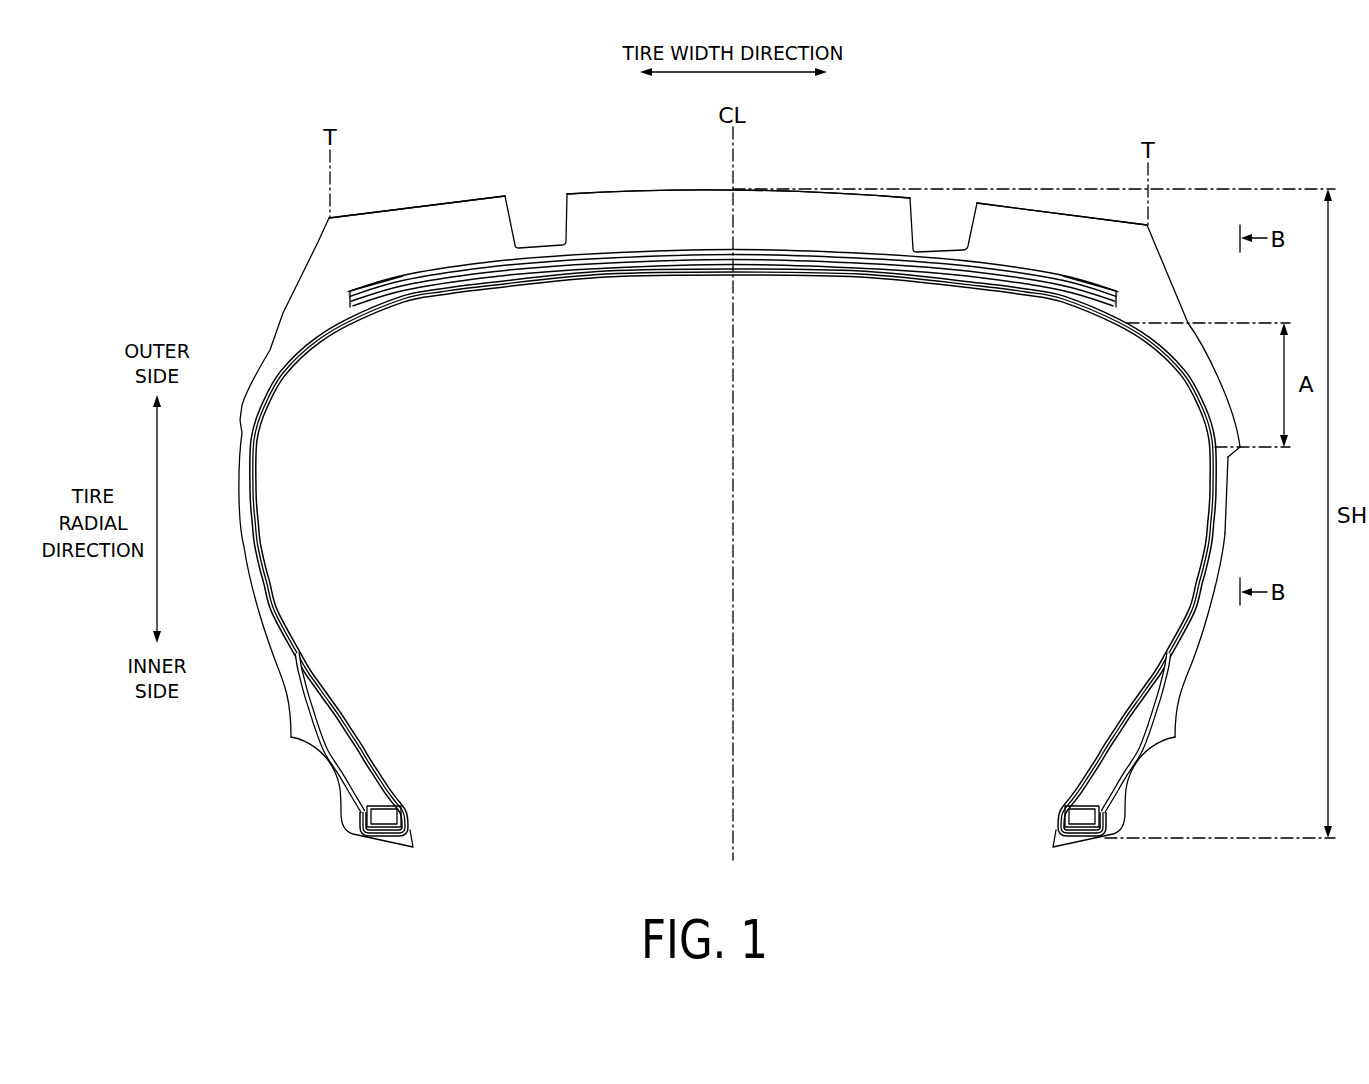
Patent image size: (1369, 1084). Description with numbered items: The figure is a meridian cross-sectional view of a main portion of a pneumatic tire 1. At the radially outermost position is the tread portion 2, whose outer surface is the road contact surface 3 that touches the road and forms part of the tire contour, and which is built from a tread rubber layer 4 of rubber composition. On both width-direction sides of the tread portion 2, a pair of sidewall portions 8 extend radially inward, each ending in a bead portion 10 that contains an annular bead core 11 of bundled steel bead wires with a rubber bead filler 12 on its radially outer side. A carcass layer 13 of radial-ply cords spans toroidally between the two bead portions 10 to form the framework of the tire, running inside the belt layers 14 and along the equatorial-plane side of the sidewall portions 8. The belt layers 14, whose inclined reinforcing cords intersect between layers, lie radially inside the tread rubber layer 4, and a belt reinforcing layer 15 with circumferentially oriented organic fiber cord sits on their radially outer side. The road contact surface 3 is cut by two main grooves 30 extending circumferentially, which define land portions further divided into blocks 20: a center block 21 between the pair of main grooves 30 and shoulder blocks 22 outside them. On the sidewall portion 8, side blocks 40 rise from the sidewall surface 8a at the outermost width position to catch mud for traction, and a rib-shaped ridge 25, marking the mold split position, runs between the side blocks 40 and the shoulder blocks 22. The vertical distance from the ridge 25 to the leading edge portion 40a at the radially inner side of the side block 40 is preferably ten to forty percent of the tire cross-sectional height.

The pneumatic tire 1 is at (910, 93).
The tread portion 2 is at (738, 156).
The road contact surface 3 is at (842, 190).
The tread rubber layer 4 is at (845, 230).
The sidewall portion 8 is at (240, 490).
The surface of the sidewall portion 8a is at (1229, 498).
The bead portion 10 is at (347, 803).
The bead core 11 is at (387, 817).
The bead filler 12 is at (373, 753).
The carcass layer 13 is at (348, 320).
The belt layers 14 is at (643, 272).
The belt reinforcing layer 15 is at (585, 278).
The blocks 20 is at (738, 166).
The center block 21 is at (634, 192).
The shoulder block 22 is at (408, 210).
The ridge 25 is at (1187, 323).
The main groove 30 is at (512, 223).
The side block 40 is at (1219, 377).
The leading edge portion 40a is at (1240, 449).